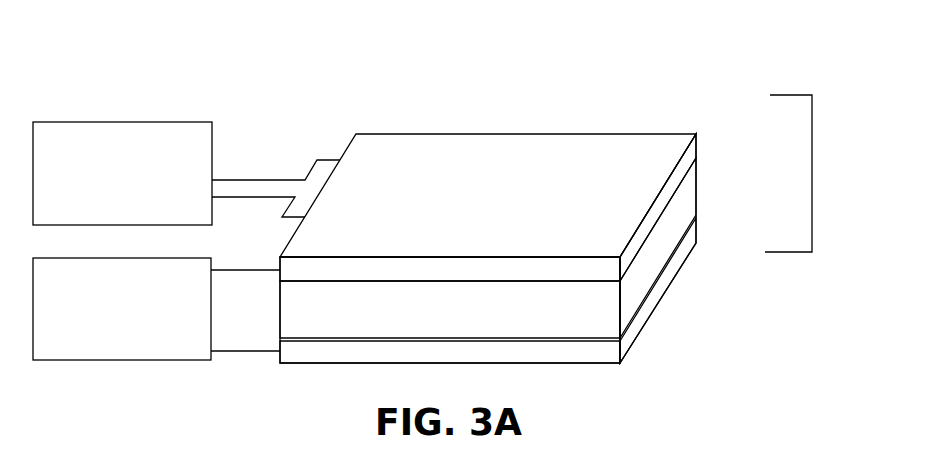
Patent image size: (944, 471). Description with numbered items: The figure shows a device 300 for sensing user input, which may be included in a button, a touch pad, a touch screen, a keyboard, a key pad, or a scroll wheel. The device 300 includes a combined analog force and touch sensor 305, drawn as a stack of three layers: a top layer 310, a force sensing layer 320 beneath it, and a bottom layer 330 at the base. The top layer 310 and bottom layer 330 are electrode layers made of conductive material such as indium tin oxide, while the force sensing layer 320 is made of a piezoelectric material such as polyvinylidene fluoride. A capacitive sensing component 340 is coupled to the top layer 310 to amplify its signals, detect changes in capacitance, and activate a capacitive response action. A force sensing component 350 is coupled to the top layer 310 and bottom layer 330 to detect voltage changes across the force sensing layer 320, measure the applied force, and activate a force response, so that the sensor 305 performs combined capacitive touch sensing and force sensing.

The device for sensing user input 300 is at (644, 109).
The combined analog force and touch sensor 305 is at (812, 178).
The top layer 310 is at (708, 148).
The force sensing layer 320 is at (708, 199).
The bottom layer 330 is at (708, 237).
The capacitive sensing component 340 is at (186, 173).
The force sensing component 350 is at (156, 309).